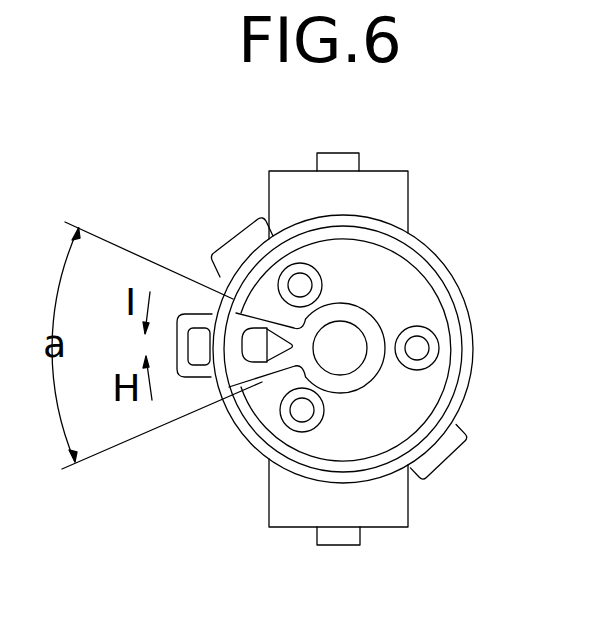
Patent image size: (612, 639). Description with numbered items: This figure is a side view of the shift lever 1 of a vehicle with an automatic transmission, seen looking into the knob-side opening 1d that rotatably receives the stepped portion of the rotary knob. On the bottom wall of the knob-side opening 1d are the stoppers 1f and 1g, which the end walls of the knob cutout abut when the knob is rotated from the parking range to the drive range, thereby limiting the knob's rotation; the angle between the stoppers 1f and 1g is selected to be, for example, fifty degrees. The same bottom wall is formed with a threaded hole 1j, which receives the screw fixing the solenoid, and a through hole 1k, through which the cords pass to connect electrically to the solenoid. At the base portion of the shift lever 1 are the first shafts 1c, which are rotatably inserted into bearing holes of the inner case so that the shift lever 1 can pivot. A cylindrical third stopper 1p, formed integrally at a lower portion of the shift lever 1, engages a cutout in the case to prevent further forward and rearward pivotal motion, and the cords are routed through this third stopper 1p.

The shift lever 1 is at (410, 202).
The first shafts 1c is at (323, 152).
The knob-side opening 1d is at (412, 437).
The stopper 1f is at (275, 393).
The stopper 1g is at (232, 302).
The threaded hole 1j is at (309, 293).
The through hole 1k is at (266, 353).
The third stopper 1p is at (186, 381).